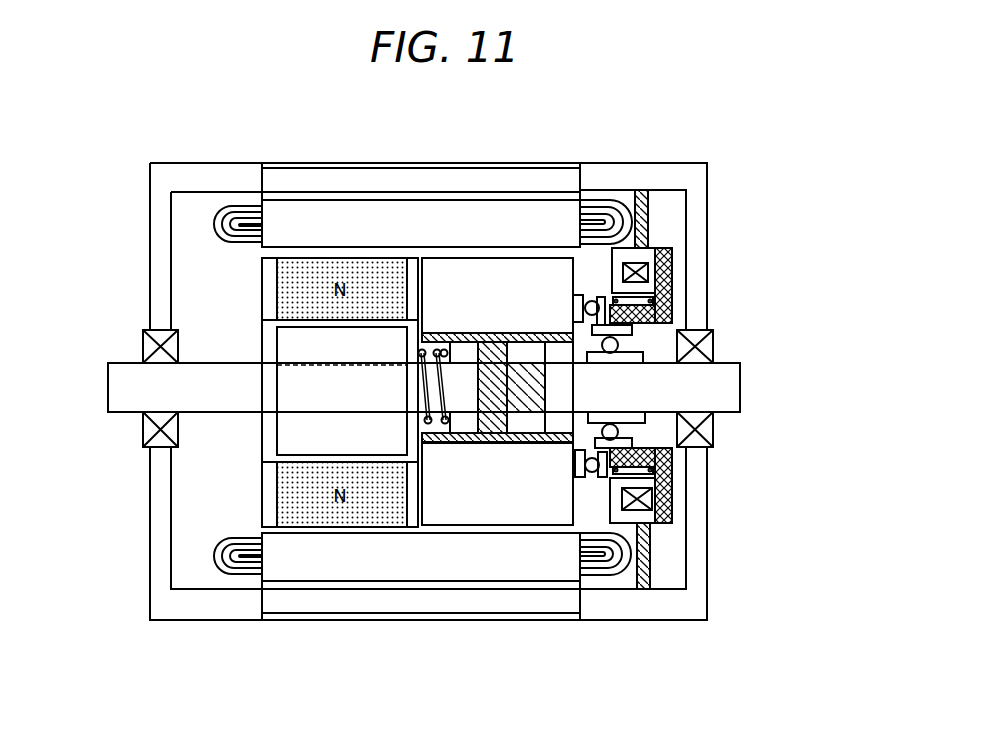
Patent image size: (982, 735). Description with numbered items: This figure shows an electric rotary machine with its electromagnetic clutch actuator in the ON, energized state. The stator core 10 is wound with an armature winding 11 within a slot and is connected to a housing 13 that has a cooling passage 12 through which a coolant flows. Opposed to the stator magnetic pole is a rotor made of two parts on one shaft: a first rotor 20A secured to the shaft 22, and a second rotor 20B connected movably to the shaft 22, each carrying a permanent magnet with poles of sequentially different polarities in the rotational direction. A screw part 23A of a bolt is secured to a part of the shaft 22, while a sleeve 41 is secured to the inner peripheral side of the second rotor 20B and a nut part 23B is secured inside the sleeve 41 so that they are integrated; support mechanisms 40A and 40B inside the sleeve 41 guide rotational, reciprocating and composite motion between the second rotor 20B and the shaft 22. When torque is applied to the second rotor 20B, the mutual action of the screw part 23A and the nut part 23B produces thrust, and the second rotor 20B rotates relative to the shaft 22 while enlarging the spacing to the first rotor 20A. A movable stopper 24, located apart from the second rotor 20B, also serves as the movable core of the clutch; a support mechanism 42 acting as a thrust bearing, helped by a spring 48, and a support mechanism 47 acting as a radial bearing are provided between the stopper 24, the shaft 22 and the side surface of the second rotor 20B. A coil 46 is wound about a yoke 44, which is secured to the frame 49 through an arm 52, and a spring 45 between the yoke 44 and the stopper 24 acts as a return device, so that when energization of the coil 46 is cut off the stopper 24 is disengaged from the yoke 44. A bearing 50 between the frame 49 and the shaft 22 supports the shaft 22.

The stator core 10 is at (278, 200).
The armature winding 11 is at (212, 205).
The cooling passage 12 is at (330, 185).
The housing 13 is at (380, 162).
The first rotor 20A is at (262, 285).
The second rotor 20B is at (440, 257).
The shaft 22 is at (110, 418).
The screw part of a bolt 23A is at (553, 344).
The nut part 23B is at (497, 344).
The stopper 24 is at (670, 249).
The support mechanism 40A is at (462, 433).
The support mechanism 40B is at (555, 425).
The sleeve 41 is at (465, 334).
The support mechanism 42 is at (593, 472).
The yoke 44 is at (637, 225).
The spring 45 is at (667, 298).
The coil 46 is at (636, 262).
The support mechanism 47 is at (617, 428).
The spring 48 is at (432, 433).
The frame 49 is at (150, 205).
The bearing 50 is at (146, 447).
The arm 52 is at (650, 557).